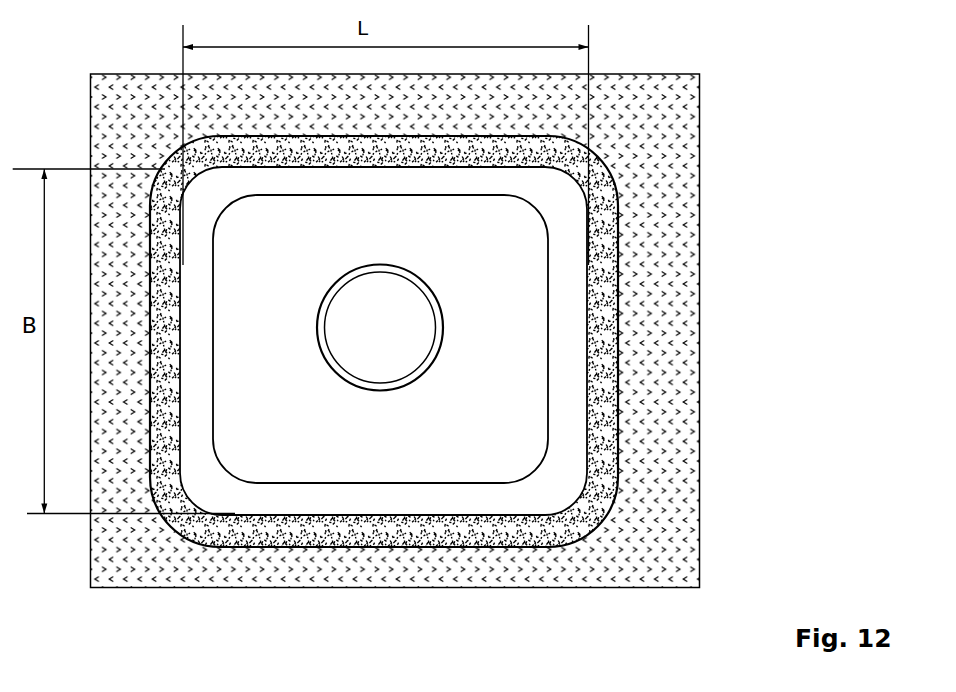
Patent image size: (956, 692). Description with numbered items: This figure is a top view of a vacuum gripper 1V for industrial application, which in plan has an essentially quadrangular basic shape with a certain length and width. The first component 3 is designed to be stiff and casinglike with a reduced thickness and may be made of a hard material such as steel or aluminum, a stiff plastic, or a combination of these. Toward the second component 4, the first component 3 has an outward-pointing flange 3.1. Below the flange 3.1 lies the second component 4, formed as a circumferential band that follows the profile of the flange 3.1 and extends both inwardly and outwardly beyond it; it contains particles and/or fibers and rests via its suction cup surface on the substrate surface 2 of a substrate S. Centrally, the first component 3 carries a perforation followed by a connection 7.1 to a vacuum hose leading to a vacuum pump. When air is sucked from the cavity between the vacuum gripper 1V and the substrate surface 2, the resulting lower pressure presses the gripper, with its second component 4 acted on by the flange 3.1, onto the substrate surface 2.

The vacuum gripper 1V is at (613, 159).
The substrate surface 2 is at (663, 400).
The first component 3 is at (518, 247).
The flange 3.1 is at (557, 262).
The second component 4 is at (600, 268).
The substrate S is at (705, 333).
The connection 7.1 is at (422, 372).